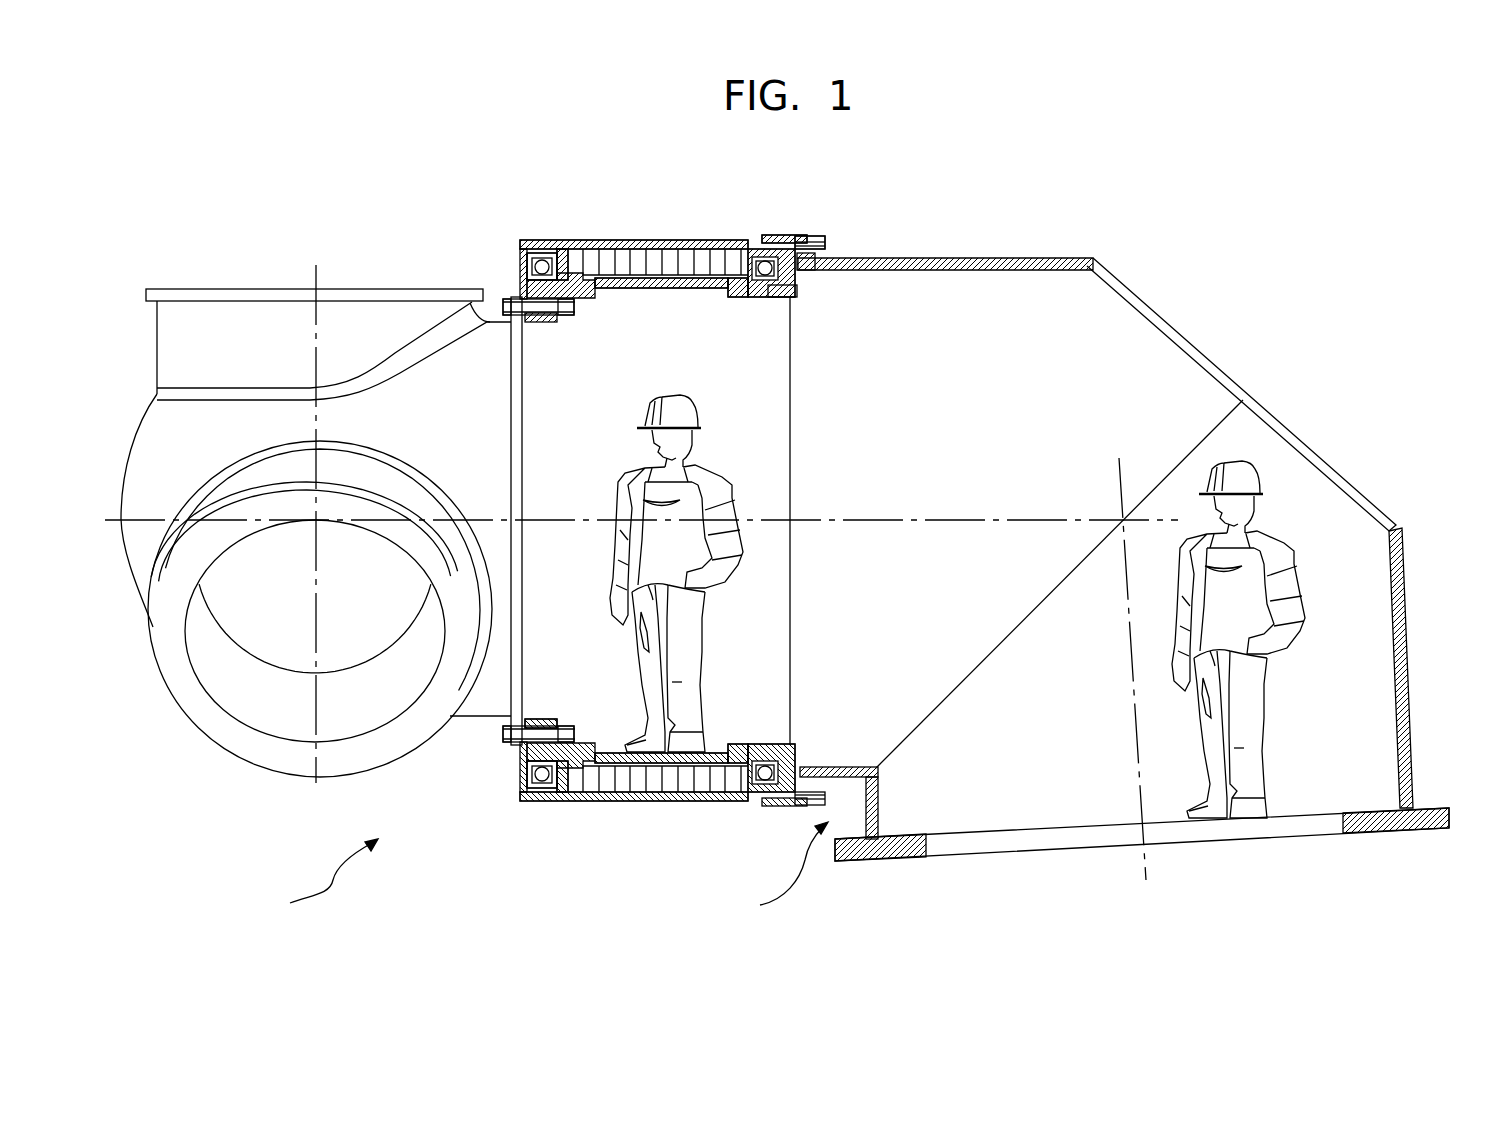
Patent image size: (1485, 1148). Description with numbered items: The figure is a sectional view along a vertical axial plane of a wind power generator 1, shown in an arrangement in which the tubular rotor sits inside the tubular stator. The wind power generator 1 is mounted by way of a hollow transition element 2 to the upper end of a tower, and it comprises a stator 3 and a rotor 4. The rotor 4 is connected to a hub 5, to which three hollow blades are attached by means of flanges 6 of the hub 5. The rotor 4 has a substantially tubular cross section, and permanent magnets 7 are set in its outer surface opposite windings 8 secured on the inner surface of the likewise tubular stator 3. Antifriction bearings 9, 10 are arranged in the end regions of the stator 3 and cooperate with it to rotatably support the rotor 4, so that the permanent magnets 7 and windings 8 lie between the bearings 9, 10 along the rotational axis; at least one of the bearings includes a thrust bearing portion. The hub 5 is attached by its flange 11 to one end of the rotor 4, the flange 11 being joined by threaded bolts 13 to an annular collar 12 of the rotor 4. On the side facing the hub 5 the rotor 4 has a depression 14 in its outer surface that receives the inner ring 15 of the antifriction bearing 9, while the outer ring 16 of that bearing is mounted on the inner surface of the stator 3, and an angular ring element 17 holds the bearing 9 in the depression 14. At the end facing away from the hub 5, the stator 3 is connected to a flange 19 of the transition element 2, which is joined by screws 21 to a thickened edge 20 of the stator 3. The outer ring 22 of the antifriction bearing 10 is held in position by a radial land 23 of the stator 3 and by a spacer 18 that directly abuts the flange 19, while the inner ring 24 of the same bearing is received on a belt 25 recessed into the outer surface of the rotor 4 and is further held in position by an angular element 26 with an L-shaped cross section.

The wind power generator 1 is at (322, 884).
The hollow transition element 2 is at (1093, 596).
The stator 3 is at (627, 800).
The rotor 4 is at (642, 288).
The hub 5 is at (157, 346).
The flanges 6 is at (258, 752).
The permanent magnets 7 is at (665, 252).
The windings 8 is at (680, 800).
The antifriction bearing 9 is at (533, 793).
The antifriction bearing 10 is at (753, 803).
The flange 11 is at (520, 752).
The annular collar 12 is at (520, 750).
The threaded bolts 13 is at (505, 300).
The depression 14 is at (565, 797).
The inner ring 15 is at (575, 262).
The outer ring 16 is at (560, 250).
The angular ring element 17 is at (510, 288).
The spacer 18 is at (803, 753).
The flange 19 is at (810, 253).
The thickened edge 20 is at (783, 233).
The screws 21 is at (810, 243).
The outer ring 22 is at (745, 262).
The radial land 23 is at (740, 803).
The inner ring 24 is at (800, 296).
The belt 25 is at (788, 303).
The angular element 26 is at (950, 260).